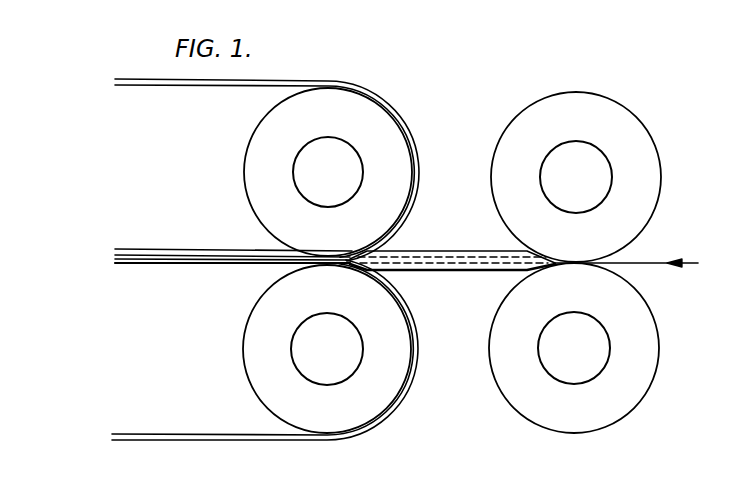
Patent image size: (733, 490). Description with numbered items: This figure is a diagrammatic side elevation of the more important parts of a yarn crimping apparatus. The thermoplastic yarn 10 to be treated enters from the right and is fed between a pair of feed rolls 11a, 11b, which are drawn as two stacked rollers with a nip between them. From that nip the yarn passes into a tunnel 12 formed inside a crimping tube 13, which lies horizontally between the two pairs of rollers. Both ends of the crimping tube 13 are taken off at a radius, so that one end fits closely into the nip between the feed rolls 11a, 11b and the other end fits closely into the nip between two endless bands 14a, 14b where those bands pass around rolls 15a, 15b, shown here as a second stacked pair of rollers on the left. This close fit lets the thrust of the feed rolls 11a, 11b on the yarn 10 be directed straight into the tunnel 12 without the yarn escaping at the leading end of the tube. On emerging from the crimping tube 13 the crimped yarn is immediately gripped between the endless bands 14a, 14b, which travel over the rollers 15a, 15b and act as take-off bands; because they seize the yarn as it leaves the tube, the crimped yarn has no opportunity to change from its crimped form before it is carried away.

The thermoplastic yarn 10 is at (683, 262).
The feed roll 11a is at (595, 115).
The feed roll 11b is at (633, 310).
The tunnel 12 is at (427, 258).
The crimping tube 13 is at (478, 272).
The endless band 14a is at (195, 232).
The endless band 14b is at (201, 267).
The roller 15a is at (377, 122).
The roller 15b is at (328, 418).